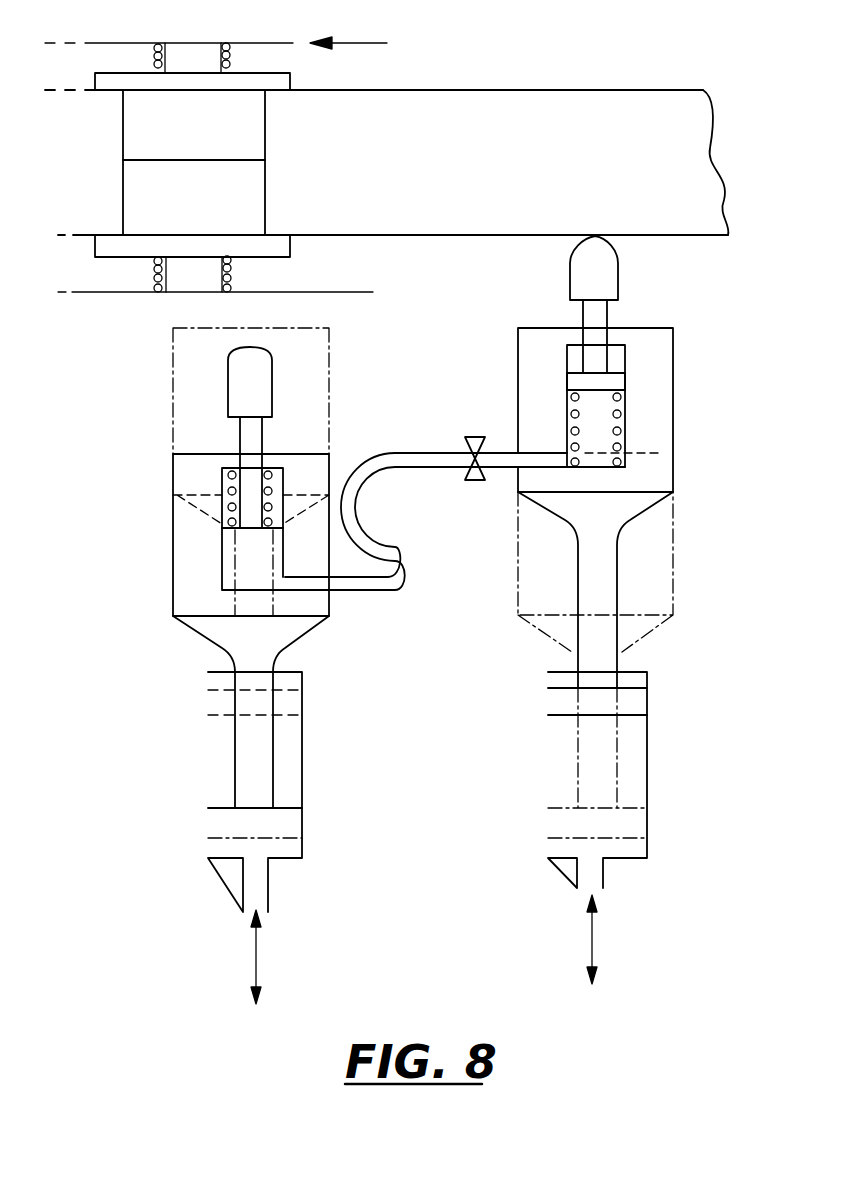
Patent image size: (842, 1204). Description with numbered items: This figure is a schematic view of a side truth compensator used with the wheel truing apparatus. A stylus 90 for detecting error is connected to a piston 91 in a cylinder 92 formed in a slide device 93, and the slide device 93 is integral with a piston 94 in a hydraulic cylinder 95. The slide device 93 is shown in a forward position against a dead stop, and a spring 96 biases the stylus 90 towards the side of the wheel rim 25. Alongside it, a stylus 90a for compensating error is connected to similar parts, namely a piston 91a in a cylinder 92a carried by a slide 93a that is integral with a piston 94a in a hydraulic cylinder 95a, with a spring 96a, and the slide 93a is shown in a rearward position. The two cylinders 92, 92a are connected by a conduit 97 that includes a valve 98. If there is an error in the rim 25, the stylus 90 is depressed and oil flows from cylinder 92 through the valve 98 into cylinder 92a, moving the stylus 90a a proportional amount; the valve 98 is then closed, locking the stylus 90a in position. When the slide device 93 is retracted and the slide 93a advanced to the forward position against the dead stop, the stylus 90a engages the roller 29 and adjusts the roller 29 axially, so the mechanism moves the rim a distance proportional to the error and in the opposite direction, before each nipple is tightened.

The wheel rim 25 is at (648, 178).
The roller 29 is at (147, 198).
The stylus 90 is at (600, 272).
The stylus 90a is at (255, 382).
The piston 91 is at (618, 382).
The piston 91a is at (247, 427).
The cylinder 92 is at (618, 358).
The cylinder 92a is at (224, 471).
The slide device 93 is at (655, 440).
The slide 93a is at (318, 603).
The piston 94 is at (636, 702).
The piston 94a is at (288, 826).
The hydraulic cylinder 95 is at (632, 770).
The hydraulic cylinder 95a is at (288, 777).
The spring 96 is at (620, 423).
The spring 96a is at (228, 492).
The conduit 97 is at (398, 452).
The valve 98 is at (476, 472).